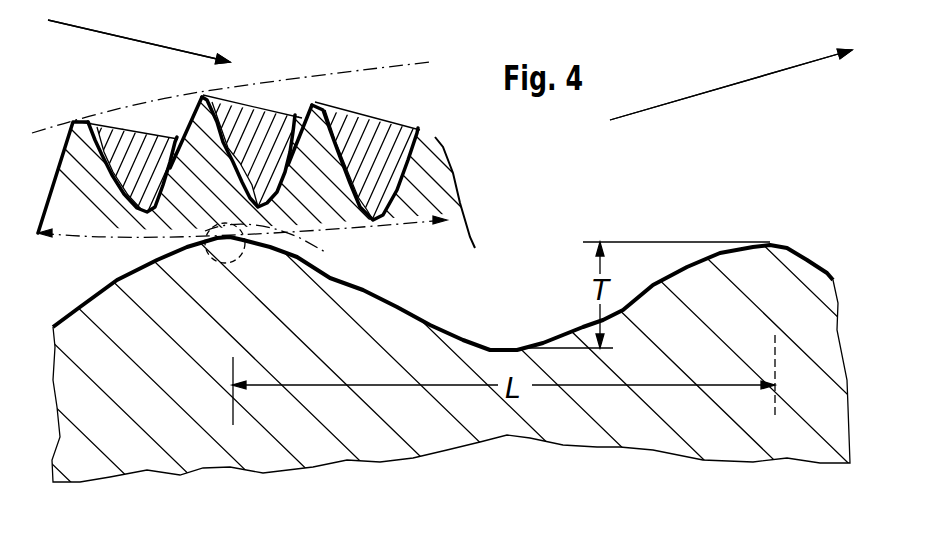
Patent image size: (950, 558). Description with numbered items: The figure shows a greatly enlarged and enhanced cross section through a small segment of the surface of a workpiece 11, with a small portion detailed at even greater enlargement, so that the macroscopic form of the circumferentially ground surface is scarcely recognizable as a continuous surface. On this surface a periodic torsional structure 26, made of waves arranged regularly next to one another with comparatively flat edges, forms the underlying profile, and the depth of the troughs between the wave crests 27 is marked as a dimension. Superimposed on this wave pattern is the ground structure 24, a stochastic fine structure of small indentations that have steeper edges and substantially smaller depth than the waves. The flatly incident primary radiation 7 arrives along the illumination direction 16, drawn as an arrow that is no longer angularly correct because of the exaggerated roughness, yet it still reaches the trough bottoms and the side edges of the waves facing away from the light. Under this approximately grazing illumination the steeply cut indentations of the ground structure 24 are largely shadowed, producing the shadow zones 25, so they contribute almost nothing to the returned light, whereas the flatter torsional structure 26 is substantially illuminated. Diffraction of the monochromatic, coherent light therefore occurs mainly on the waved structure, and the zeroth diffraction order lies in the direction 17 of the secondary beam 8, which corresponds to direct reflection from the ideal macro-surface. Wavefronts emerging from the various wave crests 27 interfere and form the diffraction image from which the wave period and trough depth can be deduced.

The primary radiation 7 is at (128, 42).
The illumination direction 16 is at (128, 42).
The secondary beam 8 is at (680, 102).
The direction of the secondary beam 17 is at (680, 102).
The ground structure 24 is at (457, 173).
The shadow zones 25 is at (147, 162).
The torsional structure 26 is at (400, 64).
The wave crests 27 is at (327, 253).
The workpiece 11 is at (447, 440).